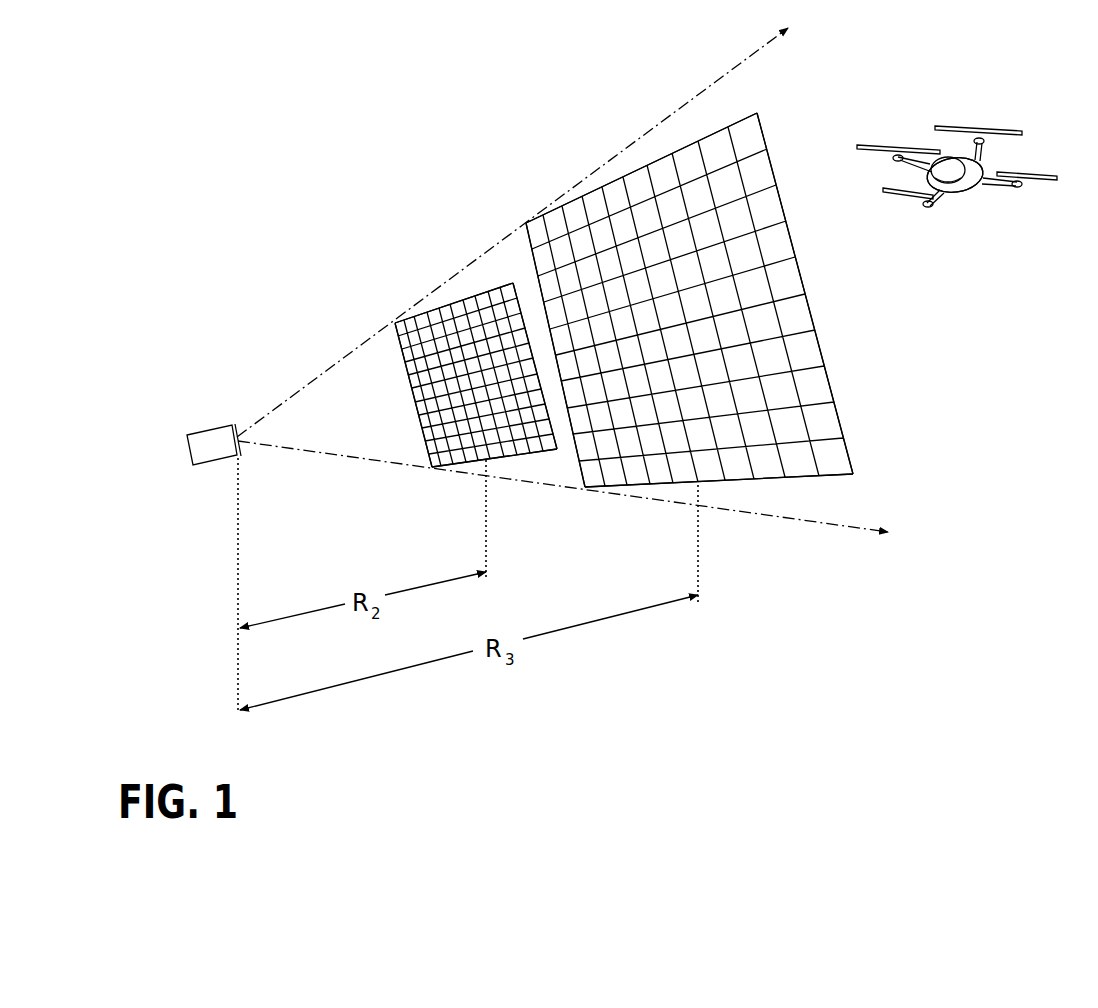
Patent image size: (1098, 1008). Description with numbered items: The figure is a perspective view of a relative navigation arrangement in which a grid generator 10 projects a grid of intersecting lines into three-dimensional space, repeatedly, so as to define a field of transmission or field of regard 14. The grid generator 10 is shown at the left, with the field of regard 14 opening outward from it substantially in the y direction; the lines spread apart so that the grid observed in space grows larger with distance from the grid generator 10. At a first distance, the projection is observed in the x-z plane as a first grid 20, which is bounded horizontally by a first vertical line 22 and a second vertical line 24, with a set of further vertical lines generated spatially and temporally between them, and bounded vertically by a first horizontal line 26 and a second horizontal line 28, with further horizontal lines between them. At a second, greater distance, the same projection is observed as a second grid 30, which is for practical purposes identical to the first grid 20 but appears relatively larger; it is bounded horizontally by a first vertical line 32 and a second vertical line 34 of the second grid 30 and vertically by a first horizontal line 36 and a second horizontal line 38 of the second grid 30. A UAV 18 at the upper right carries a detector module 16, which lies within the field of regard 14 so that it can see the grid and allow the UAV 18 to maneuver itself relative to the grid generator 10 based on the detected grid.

The grid generator 10 is at (221, 474).
The field of regard 14 is at (311, 427).
The detector module 16 is at (951, 183).
The UAV 18 is at (1000, 158).
The first grid 20 is at (473, 287).
The first vertical line 22 is at (392, 350).
The second vertical line 24 is at (517, 288).
The first horizontal line 26 is at (437, 307).
The second horizontal line 28 is at (519, 456).
The second grid 30 is at (793, 229).
The first vertical line of the second grid 32 is at (582, 451).
The second vertical line of the second grid 34 is at (773, 168).
The first horizontal line of the second grid 36 is at (615, 180).
The second horizontal line of the second grid 38 is at (778, 482).